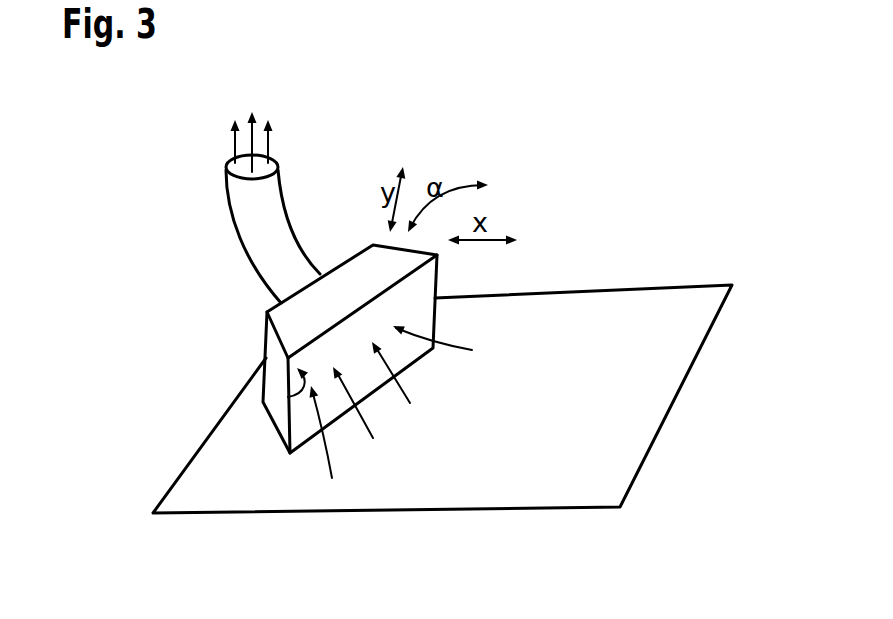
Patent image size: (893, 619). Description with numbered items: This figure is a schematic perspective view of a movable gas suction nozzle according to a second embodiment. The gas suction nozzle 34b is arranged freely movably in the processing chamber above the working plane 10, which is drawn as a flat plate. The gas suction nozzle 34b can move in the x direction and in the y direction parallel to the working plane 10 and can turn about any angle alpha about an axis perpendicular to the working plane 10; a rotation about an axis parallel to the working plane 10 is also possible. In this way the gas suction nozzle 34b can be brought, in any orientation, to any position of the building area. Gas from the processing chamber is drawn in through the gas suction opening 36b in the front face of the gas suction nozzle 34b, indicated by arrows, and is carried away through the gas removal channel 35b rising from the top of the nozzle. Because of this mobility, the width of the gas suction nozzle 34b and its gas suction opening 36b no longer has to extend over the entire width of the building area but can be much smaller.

The working plane 10 is at (621, 310).
The gas suction nozzle 34b is at (297, 318).
The gas removal channel 35b is at (252, 208).
The gas suction opening 36b is at (288, 397).